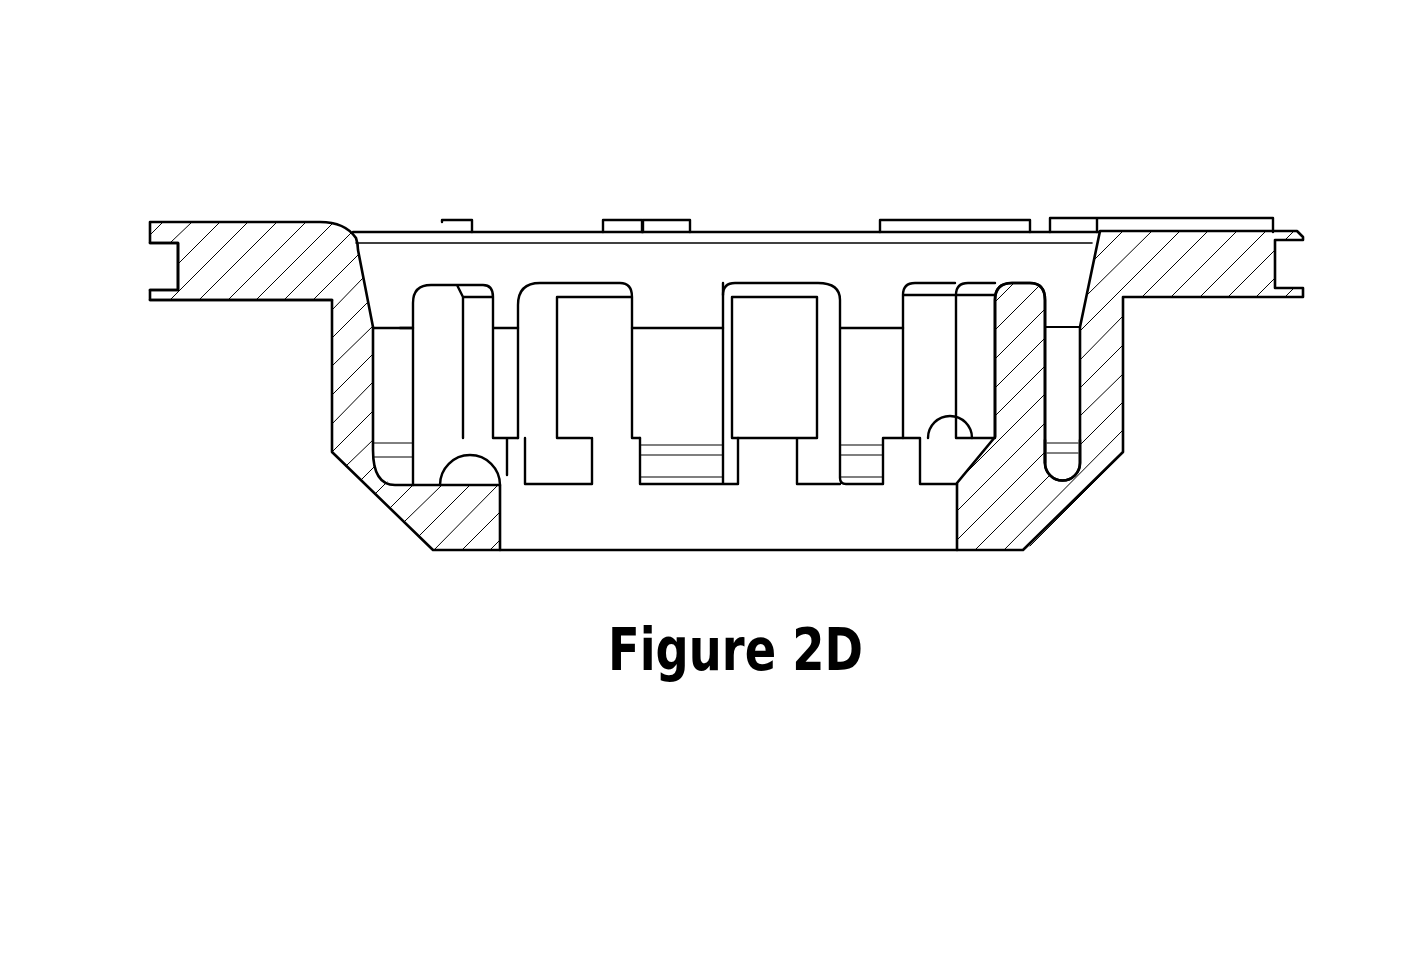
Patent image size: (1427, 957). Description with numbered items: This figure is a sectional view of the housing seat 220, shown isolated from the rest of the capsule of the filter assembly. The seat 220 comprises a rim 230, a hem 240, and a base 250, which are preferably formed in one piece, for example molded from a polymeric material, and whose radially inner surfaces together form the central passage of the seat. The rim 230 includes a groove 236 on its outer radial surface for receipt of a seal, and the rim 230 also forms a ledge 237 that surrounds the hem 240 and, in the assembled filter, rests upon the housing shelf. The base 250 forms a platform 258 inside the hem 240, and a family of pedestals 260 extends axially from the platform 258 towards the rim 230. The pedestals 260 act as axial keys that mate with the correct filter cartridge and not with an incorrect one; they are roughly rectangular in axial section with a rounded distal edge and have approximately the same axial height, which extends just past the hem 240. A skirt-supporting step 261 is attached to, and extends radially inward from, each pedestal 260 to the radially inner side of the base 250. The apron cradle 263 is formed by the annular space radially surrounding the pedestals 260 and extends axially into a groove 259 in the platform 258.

The housing seat 220 is at (774, 134).
The rim 230 is at (1315, 225).
The groove 236 is at (178, 253).
The ledge 237 is at (267, 300).
The hem 240 is at (1315, 307).
The base 250 is at (1315, 460).
The platform 258 is at (506, 476).
The groove 259 is at (1060, 471).
The pedestal 260 is at (1008, 375).
The skirt-supporting step 261 is at (932, 434).
The apron cradle 263 is at (1057, 375).